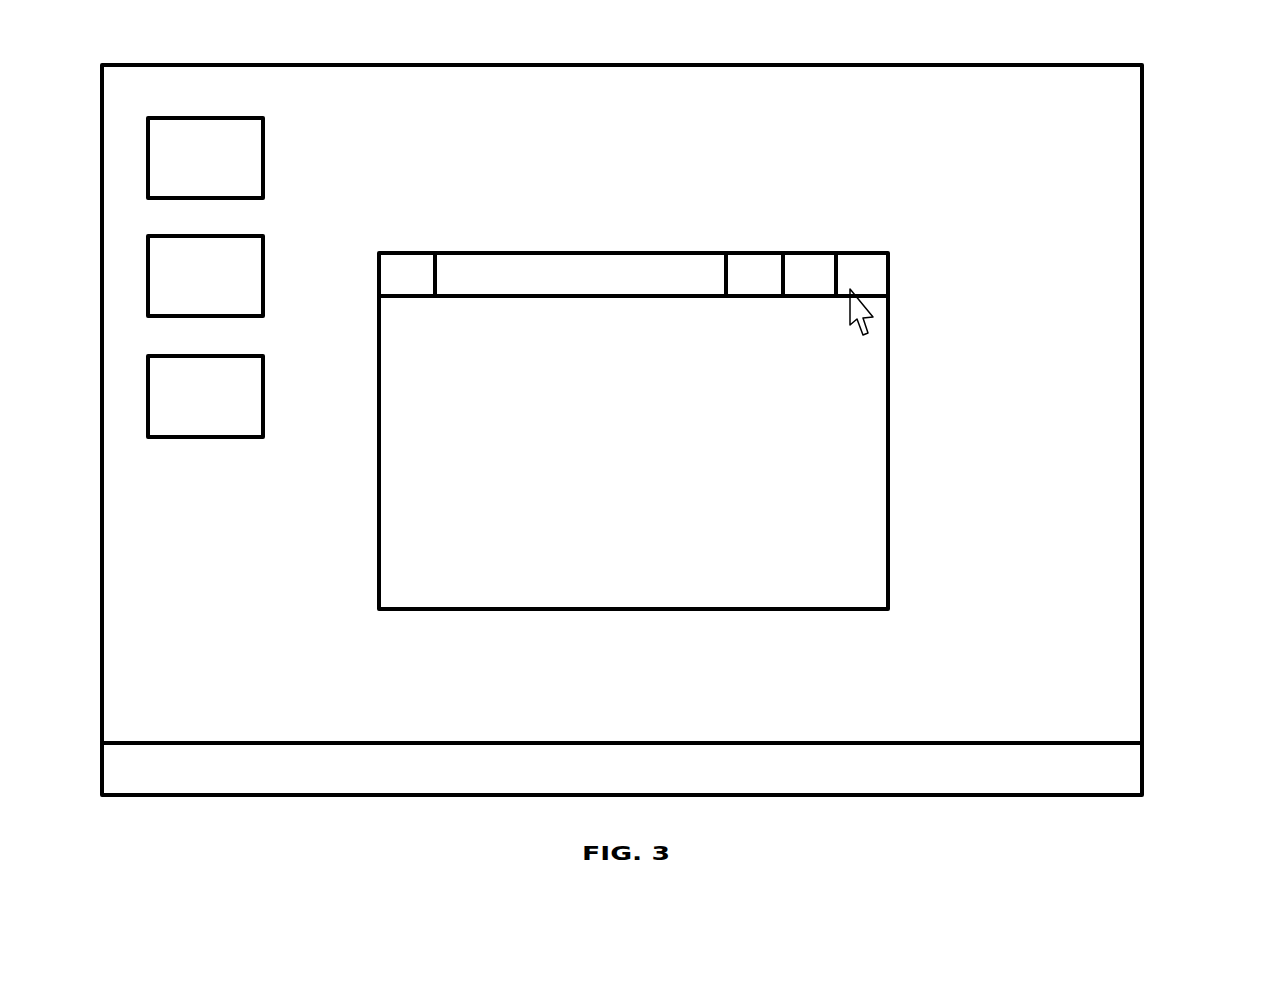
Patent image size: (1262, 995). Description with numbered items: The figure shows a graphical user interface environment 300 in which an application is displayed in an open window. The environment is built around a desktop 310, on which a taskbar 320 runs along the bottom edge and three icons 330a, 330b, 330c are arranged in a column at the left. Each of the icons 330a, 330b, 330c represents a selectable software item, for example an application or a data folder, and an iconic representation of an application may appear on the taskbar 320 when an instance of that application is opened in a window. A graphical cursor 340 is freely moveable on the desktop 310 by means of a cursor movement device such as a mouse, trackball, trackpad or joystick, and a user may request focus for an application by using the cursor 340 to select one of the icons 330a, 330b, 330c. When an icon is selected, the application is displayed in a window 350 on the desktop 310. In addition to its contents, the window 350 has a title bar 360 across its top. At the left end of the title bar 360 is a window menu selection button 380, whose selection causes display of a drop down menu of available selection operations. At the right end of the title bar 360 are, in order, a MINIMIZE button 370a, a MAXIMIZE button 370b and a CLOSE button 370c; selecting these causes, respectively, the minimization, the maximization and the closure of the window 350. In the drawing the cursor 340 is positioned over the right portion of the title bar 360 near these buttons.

The graphical user interface environment 300 is at (808, 60).
The desktop 310 is at (1144, 210).
The taskbar 320 is at (1115, 757).
The icon 330a is at (263, 168).
The icon 330b is at (265, 288).
The icon 330c is at (265, 393).
The graphical cursor 340 is at (862, 342).
The window 350 is at (890, 503).
The title bar 360 is at (515, 263).
The MINIMIZE button 370a is at (737, 263).
The MAXIMIZE button 370b is at (808, 288).
The CLOSE button 370c is at (868, 270).
The window menu selection button 380 is at (408, 263).